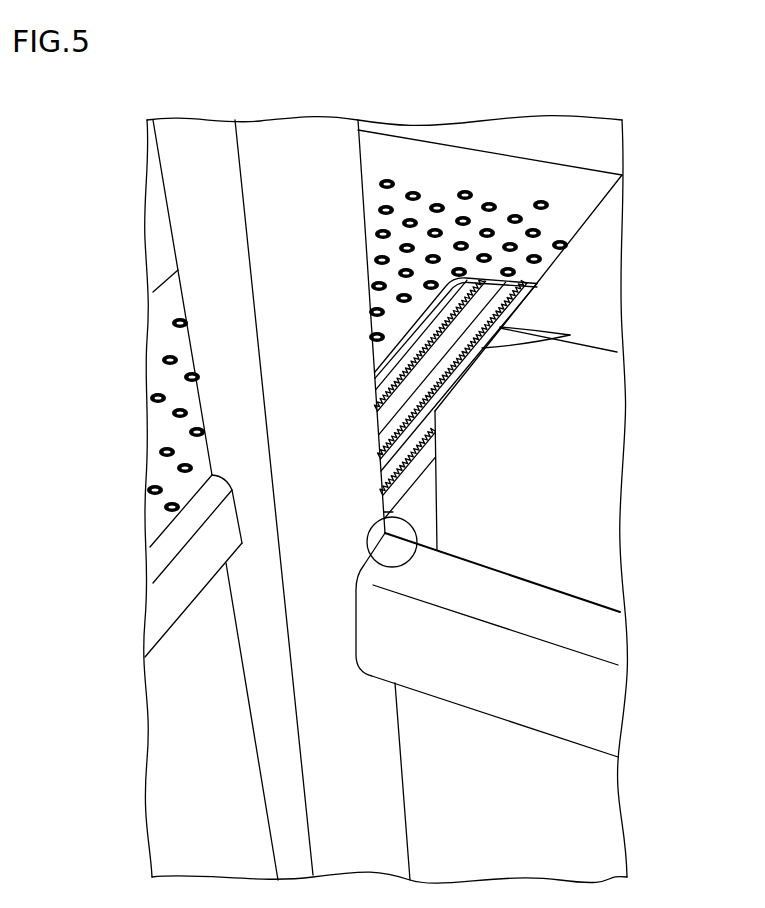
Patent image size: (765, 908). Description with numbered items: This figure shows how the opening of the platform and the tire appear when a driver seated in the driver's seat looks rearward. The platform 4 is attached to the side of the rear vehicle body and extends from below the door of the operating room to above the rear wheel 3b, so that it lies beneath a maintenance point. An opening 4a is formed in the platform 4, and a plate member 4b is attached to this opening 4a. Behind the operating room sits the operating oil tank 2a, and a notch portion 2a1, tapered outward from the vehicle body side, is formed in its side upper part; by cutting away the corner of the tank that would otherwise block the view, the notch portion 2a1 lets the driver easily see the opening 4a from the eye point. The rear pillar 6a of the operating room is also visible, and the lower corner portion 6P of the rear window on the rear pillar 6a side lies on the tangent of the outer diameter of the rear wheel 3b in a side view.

The operating oil tank 2a is at (598, 298).
The notch portion 2a1 is at (570, 335).
The rear wheel 3b is at (438, 420).
The platform 4 is at (394, 325).
The opening 4a is at (495, 278).
The plate member 4b is at (445, 340).
The rear pillar 6a is at (222, 350).
The lower corner portion 6P is at (415, 528).